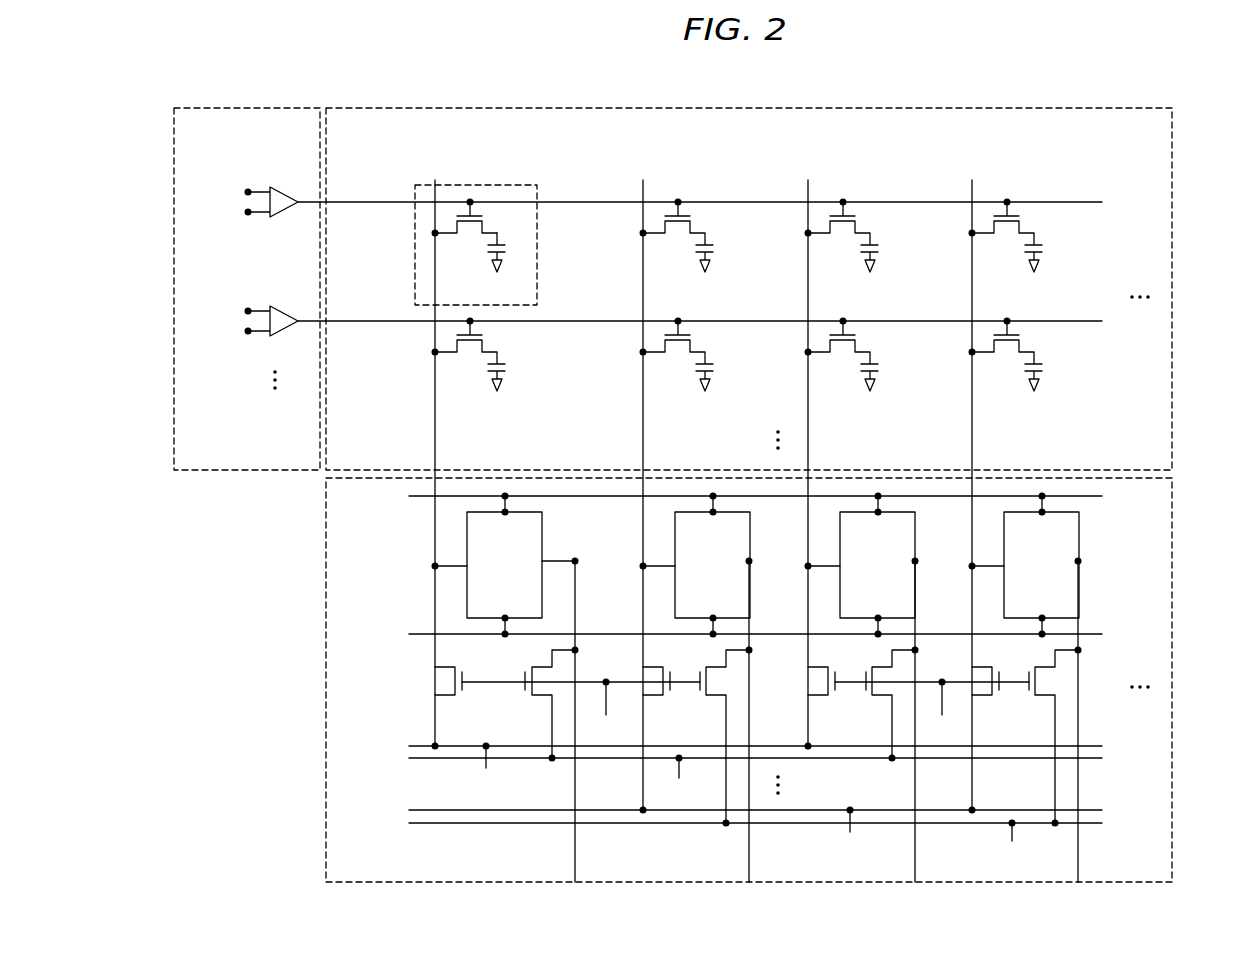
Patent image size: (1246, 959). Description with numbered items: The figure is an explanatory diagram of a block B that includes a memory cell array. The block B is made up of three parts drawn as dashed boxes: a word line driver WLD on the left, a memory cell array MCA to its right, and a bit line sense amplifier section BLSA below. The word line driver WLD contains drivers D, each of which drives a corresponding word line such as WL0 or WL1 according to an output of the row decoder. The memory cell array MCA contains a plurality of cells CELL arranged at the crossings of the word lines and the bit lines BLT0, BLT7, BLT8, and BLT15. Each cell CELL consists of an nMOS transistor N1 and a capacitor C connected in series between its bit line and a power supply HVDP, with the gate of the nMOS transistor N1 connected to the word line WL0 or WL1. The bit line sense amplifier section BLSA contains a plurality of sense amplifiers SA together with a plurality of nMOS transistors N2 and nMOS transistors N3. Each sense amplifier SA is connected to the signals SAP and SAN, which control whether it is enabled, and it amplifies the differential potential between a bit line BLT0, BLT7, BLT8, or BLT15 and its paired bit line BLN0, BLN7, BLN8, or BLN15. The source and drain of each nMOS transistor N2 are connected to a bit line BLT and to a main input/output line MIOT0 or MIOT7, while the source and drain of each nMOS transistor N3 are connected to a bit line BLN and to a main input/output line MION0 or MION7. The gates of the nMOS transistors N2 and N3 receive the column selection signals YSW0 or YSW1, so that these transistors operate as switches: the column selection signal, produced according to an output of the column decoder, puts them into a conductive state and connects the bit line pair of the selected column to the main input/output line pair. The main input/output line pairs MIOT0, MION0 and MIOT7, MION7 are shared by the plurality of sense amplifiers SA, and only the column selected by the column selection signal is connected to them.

The block B is at (68, 130).
The word line driver WLD is at (214, 289).
The driver D is at (271, 186).
The memory cell array MCA is at (1173, 300).
The word line WL0 is at (700, 220).
The word line WL1 is at (700, 339).
The bit line BLT0 is at (435, 451).
The bit line BLT7 is at (643, 483).
The bit line BLT8 is at (808, 451).
The bit line BLT15 is at (972, 483).
The cell CELL is at (514, 288).
The nMOS transistor N1 is at (465, 234).
The capacitor C is at (507, 252).
The power supply HVDP is at (765, 345).
The bit line sense amplifier section BLSA is at (325, 705).
The signal SAP is at (733, 497).
The signal SAN is at (733, 635).
The sense amplifier SA is at (757, 565).
The nMOS transistor N2 is at (453, 697).
The nMOS transistor N3 is at (544, 704).
The column selection signal YSW0 is at (581, 712).
The column selection signal YSW1 is at (932, 712).
The main input/output line MIOT0 is at (755, 773).
The main input/output line MION0 is at (755, 779).
The main input/output line MIOT7 is at (755, 837).
The main input/output line MION7 is at (755, 844).
The bit line BLN0 is at (575, 739).
The bit line BLN7 is at (749, 739).
The bit line BLN8 is at (915, 739).
The bit line BLN15 is at (1078, 739).